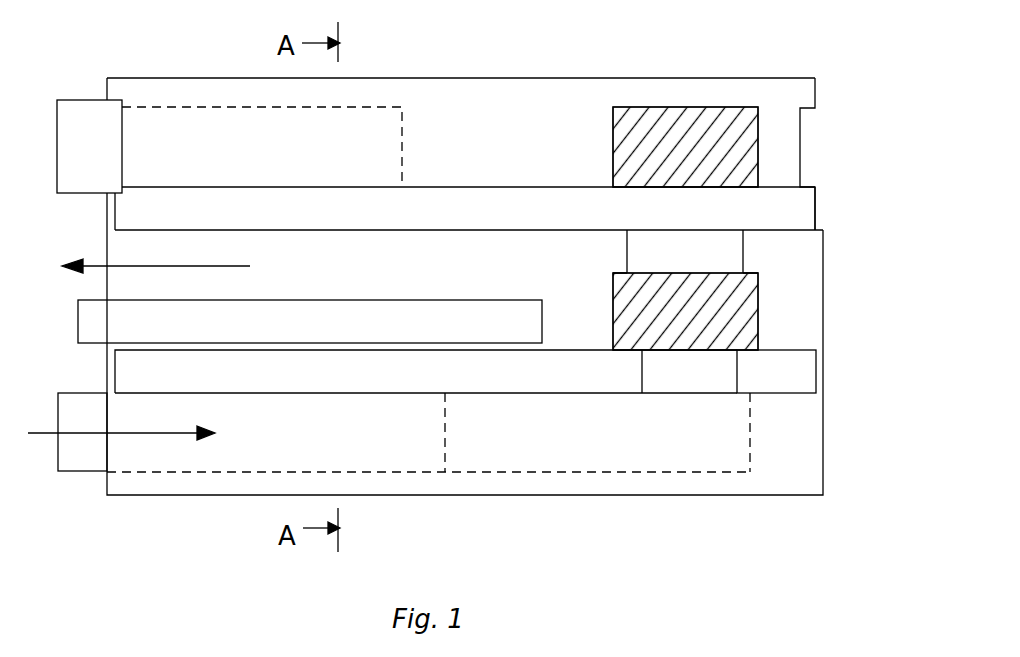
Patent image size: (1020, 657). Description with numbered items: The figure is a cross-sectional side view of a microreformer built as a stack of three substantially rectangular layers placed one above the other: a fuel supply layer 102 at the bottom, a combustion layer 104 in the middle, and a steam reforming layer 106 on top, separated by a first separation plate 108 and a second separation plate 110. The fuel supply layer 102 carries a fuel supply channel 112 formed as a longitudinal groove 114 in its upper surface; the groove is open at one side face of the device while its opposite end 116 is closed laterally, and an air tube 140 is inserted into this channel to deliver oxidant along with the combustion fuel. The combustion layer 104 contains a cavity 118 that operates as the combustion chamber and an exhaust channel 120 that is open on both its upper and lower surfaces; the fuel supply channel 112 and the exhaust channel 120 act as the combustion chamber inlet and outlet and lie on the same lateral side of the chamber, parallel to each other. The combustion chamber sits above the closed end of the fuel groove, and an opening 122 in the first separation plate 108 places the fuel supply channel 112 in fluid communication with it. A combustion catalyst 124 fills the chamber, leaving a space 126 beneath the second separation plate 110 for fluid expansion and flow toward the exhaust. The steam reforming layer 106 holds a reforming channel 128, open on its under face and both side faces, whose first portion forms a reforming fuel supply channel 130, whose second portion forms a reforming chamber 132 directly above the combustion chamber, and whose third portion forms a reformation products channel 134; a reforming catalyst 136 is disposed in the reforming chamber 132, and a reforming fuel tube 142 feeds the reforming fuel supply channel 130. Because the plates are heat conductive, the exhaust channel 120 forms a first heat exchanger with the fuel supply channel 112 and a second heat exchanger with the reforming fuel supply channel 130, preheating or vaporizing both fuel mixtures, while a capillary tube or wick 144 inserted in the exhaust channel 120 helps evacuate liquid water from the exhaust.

The fuel supply layer 102 is at (823, 425).
The combustion layer 104 is at (823, 314).
The steam reforming layer 106 is at (802, 155).
The first separation plate 108 is at (800, 389).
The second separation plate 110 is at (772, 223).
The fuel supply channel 112 is at (628, 447).
The longitudinal groove 114 is at (680, 475).
The opposite end of the groove 116 is at (752, 440).
The cavity 118 is at (710, 327).
The exhaust channel 120 is at (450, 288).
The opening 122 is at (710, 389).
The combustion catalyst 124 is at (747, 297).
The space 126 is at (710, 271).
The reforming channel 128 is at (457, 93).
The reforming fuel supply channel 130 is at (288, 158).
The reforming chamber 132 is at (670, 93).
The reformation products channel 134 is at (780, 97).
The reforming catalyst 136 is at (745, 148).
The air tube 140 is at (80, 472).
The reforming fuel tube 142 is at (80, 100).
The capillary tube or wick 144 is at (360, 335).